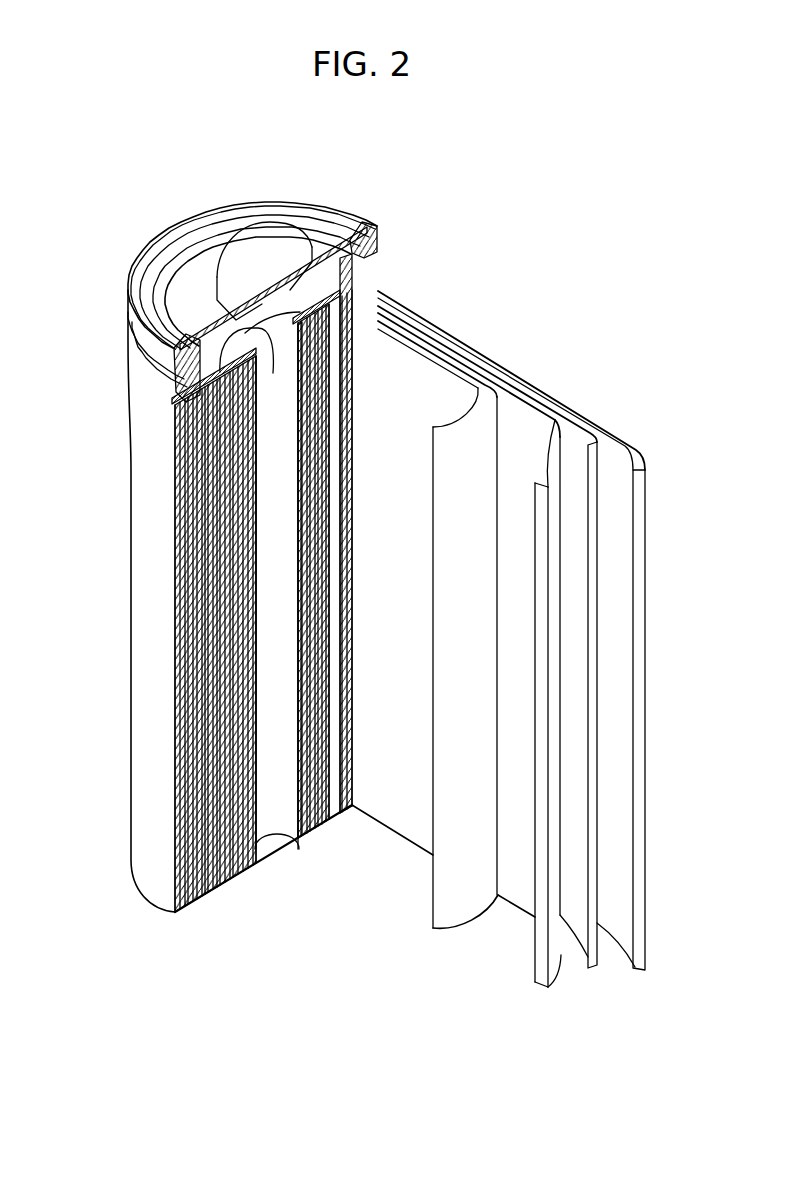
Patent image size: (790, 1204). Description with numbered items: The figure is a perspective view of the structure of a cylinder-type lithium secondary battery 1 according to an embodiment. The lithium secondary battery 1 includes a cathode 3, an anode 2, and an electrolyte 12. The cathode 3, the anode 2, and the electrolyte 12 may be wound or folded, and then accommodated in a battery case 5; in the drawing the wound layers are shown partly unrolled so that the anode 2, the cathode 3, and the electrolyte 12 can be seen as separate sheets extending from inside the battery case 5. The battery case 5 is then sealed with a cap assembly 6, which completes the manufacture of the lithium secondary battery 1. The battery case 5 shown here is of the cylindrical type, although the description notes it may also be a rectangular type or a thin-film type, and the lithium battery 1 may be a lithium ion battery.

The lithium secondary battery 1 is at (551, 208).
The anode 2 is at (626, 443).
The cathode 3 is at (547, 433).
The battery case 5 is at (132, 599).
The cap assembly 6 is at (246, 242).
The electrolyte 12 is at (478, 405).